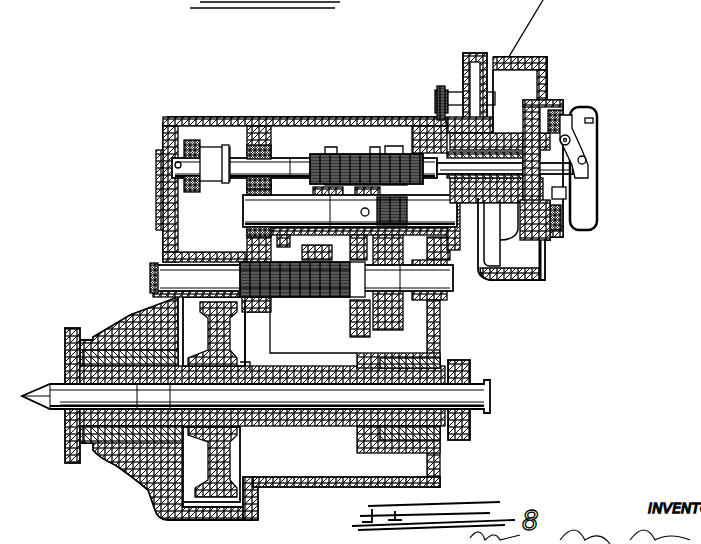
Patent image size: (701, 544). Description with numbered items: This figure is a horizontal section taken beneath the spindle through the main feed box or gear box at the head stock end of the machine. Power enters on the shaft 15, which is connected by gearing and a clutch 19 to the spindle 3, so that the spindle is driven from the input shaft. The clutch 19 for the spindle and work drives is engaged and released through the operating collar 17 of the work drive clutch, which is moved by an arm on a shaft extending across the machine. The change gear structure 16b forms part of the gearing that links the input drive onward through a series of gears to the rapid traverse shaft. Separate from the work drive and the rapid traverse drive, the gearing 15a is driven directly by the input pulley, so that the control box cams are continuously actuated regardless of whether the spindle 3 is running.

The spindle 3 is at (55, 383).
The shaft 15 is at (437, 163).
The gearing 15a is at (457, 77).
The change gear structure 16b is at (305, 186).
The operating collar 17 is at (206, 150).
The clutch 19 is at (570, 210).